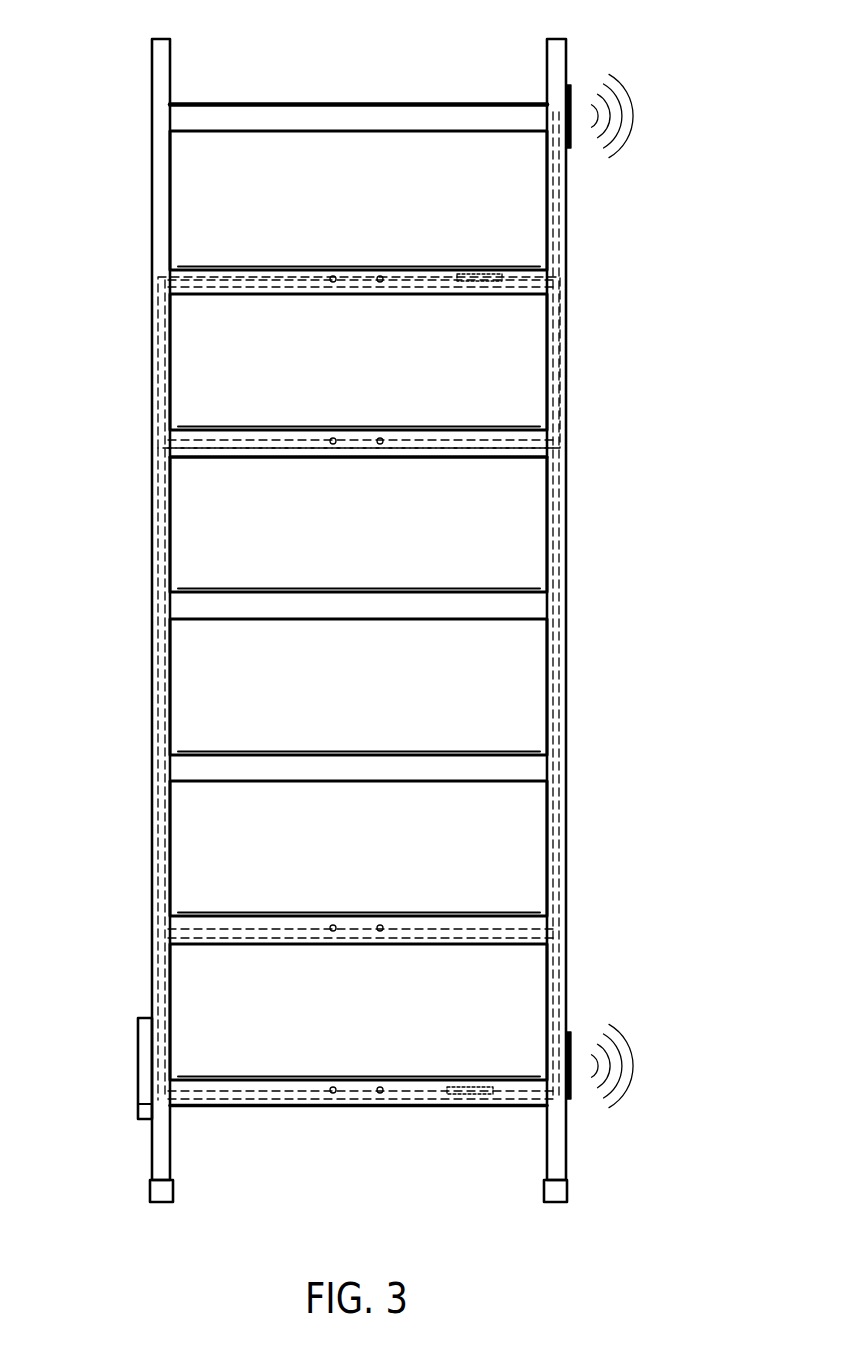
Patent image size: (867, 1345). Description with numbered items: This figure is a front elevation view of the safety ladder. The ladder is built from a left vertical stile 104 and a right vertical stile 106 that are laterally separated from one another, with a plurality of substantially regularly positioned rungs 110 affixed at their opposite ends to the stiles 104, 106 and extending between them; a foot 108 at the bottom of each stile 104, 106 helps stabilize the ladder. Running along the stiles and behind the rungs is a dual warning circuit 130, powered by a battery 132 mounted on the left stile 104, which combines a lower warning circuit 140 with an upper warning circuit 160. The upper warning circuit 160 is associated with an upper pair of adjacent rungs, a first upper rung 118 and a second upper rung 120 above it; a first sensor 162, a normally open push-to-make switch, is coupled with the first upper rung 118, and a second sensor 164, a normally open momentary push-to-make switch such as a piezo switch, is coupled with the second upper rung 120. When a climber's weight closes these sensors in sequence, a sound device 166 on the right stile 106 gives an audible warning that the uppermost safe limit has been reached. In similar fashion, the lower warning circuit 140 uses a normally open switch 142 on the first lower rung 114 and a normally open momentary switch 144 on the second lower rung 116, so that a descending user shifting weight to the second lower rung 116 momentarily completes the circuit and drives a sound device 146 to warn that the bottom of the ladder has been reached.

The left vertical stile 104 is at (151, 150).
The right vertical stile 106 is at (566, 587).
The foot 108 is at (175, 1190).
The rungs 110 is at (295, 72).
The first lower rung 114 is at (252, 945).
The second lower rung 116 is at (243, 1108).
The first upper rung 118 is at (243, 458).
The second upper rung 120 is at (258, 295).
The dual warning circuit 130 is at (150, 537).
The battery 132 is at (138, 1058).
The lower warning circuit 140 is at (447, 940).
The normally open switch 142 is at (380, 926).
The normally open momentary switch 144 is at (380, 1088).
The sound device 146 is at (569, 1032).
The upper warning circuit 160 is at (450, 290).
The first sensor 162 is at (380, 439).
The second sensor 164 is at (380, 277).
The sound device 166 is at (571, 86).